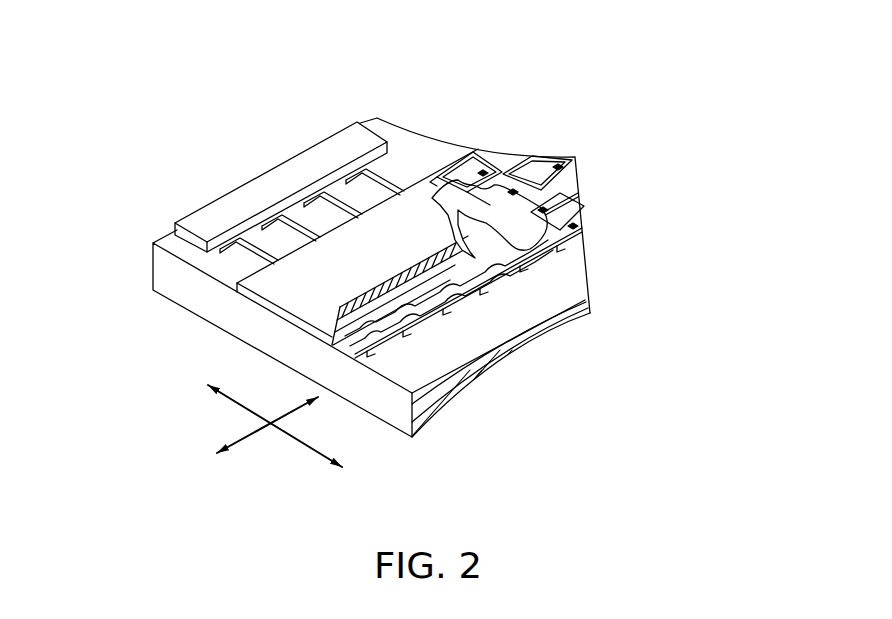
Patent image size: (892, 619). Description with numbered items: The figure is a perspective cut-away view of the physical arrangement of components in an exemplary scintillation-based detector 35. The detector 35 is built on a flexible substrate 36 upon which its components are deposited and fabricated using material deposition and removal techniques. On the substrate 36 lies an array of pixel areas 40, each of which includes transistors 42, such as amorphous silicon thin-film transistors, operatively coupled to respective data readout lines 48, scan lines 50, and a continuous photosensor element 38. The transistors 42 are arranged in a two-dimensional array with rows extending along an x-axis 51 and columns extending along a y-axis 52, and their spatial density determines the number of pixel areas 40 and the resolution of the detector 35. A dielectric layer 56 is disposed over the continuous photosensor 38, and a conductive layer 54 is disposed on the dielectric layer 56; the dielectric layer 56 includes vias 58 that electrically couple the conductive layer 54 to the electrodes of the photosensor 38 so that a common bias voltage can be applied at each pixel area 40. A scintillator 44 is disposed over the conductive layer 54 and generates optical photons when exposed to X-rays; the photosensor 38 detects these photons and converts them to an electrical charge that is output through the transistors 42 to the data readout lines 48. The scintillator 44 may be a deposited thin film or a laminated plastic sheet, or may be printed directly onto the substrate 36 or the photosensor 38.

The scintillation-based detector 35 is at (215, 155).
The flexible substrate 36 is at (195, 298).
The continuous photosensor element 38 is at (455, 192).
The pixel areas 40 is at (462, 176).
The transistors 42 is at (484, 171).
The scintillator 44 is at (363, 330).
The data readout lines 48 is at (522, 160).
The scan lines 50 is at (438, 178).
The x-axis 51 is at (310, 448).
The y-axis 52 is at (250, 440).
The conductive layer 54 is at (440, 267).
The dielectric layer 56 is at (396, 298).
The vias 58 is at (472, 226).